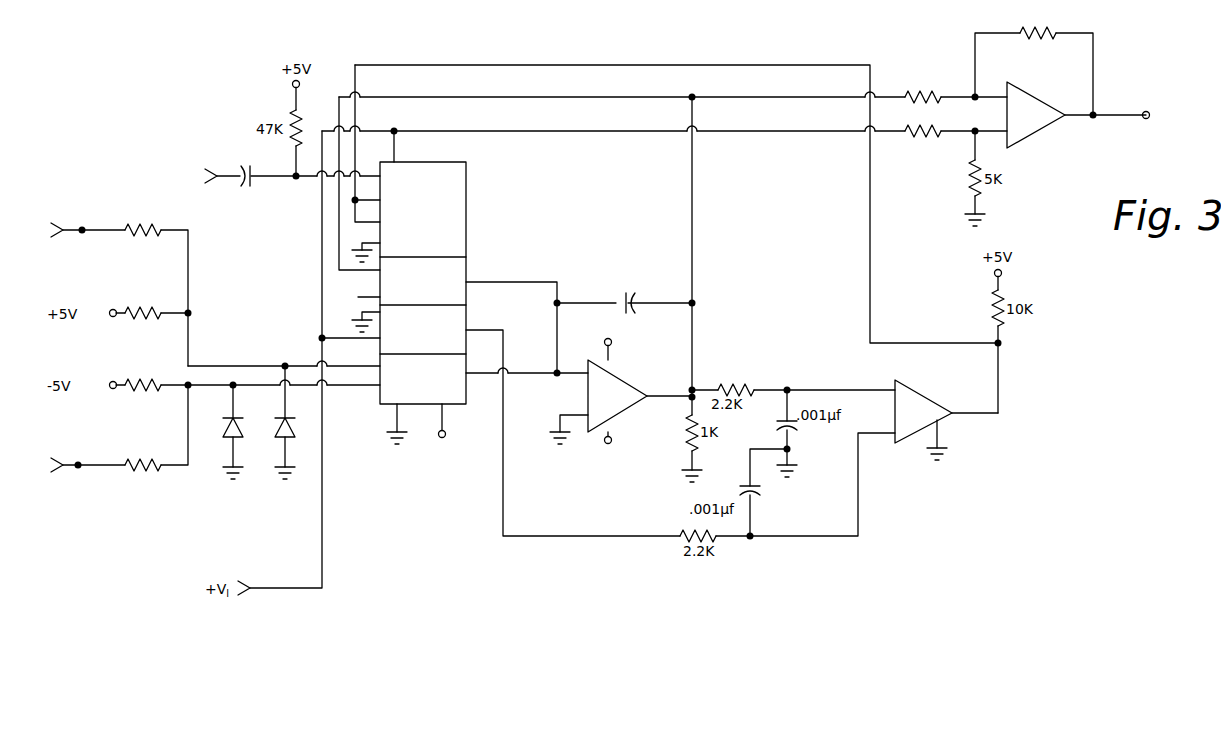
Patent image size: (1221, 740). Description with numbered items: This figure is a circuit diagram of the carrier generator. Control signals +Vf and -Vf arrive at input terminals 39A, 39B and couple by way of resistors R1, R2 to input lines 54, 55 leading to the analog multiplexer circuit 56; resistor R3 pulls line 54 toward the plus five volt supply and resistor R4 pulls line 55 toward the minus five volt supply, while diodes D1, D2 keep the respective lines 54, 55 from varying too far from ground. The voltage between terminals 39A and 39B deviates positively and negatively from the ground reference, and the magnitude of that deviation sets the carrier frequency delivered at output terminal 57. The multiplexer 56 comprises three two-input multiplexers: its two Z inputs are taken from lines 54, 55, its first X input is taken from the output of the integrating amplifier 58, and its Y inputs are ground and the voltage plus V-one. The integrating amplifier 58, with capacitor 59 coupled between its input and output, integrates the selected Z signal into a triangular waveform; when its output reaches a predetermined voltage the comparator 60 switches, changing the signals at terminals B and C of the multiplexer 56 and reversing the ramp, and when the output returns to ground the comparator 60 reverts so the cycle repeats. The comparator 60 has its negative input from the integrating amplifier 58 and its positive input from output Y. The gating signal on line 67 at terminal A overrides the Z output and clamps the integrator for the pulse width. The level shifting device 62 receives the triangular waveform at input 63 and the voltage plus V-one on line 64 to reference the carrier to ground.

The input terminal 39A is at (84, 230).
The input terminal 39B is at (78, 468).
The input gating signal line 67 is at (278, 178).
The analog multiplexer circuit 56 is at (430, 192).
The input line 54 is at (350, 356).
The input line 55 is at (339, 387).
The capacitor 59 is at (614, 303).
The integrating amplifier 58 is at (588, 385).
The comparator 60 is at (935, 398).
The input 63 is at (956, 97).
The input line 64 is at (957, 135).
The level shifting device 62 is at (1056, 124).
The output terminal 57 is at (1147, 112).
The resistor R1 is at (159, 226).
The resistor R2 is at (159, 461).
The resistor R3 is at (159, 309).
The resistor R4 is at (159, 381).
The diode D1 is at (227, 438).
The diode D2 is at (279, 438).